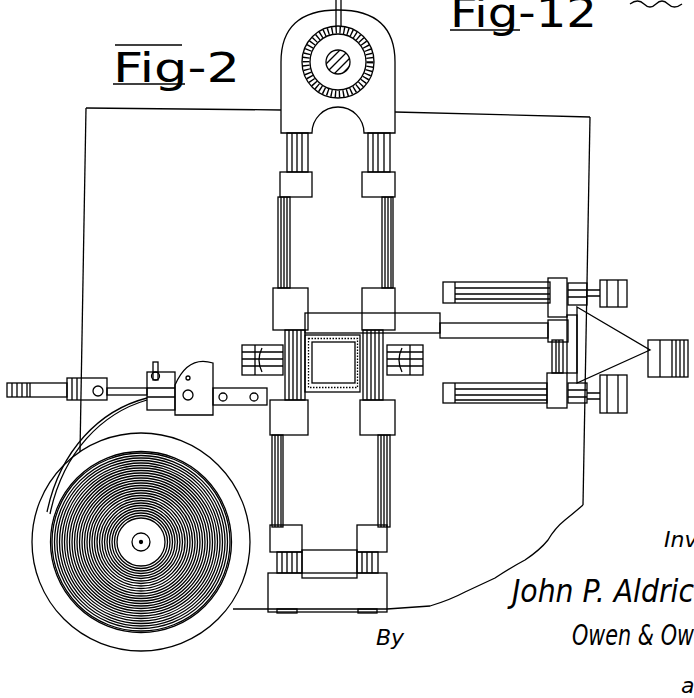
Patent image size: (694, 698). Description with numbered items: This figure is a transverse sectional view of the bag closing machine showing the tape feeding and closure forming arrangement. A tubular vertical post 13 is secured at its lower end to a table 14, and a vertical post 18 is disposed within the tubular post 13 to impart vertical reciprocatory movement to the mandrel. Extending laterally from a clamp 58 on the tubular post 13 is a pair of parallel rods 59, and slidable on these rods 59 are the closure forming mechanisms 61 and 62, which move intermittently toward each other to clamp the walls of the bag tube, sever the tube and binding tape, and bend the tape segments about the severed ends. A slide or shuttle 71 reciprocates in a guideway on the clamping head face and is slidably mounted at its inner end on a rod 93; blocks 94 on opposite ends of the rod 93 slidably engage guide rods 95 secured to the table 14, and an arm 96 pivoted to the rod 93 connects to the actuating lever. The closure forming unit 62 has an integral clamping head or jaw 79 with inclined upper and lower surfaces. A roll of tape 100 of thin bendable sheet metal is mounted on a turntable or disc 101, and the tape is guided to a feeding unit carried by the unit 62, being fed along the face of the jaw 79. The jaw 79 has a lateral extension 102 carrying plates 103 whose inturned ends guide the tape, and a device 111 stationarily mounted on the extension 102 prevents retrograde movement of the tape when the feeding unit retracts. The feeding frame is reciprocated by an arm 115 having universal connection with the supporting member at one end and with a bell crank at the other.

The vertical post 13 is at (373, 76).
The table 14 is at (583, 137).
The vertical post 18 is at (352, 52).
The clamp 58 is at (290, 52).
The parallel rods 59 is at (388, 150).
The closure forming mechanism 61 is at (375, 228).
The closure forming mechanism 62 is at (373, 472).
The shuttle 71 is at (482, 333).
The clamping jaw 79 is at (345, 405).
The rod 93 is at (553, 357).
The blocks 94 is at (555, 288).
The guide rods 95 is at (515, 403).
The arm 96 is at (612, 338).
The roll of tape 100 is at (183, 613).
The turntable 101 is at (215, 608).
The lateral extension 102 is at (241, 405).
The plates 103 is at (218, 388).
The device 111 is at (152, 368).
The arm 115 is at (122, 390).